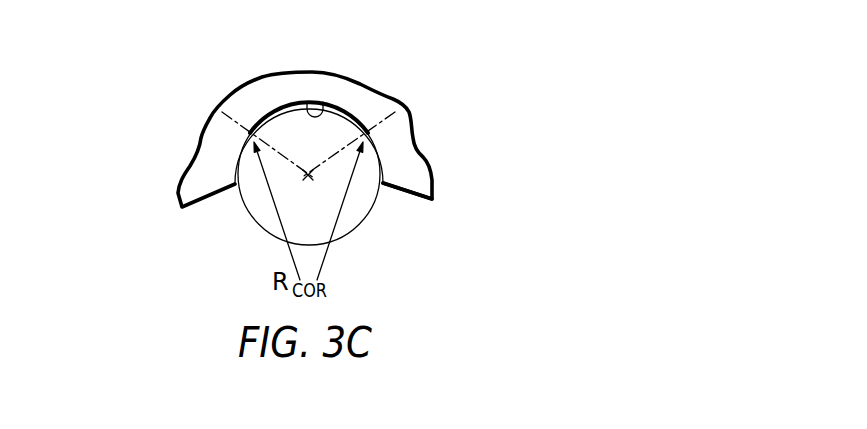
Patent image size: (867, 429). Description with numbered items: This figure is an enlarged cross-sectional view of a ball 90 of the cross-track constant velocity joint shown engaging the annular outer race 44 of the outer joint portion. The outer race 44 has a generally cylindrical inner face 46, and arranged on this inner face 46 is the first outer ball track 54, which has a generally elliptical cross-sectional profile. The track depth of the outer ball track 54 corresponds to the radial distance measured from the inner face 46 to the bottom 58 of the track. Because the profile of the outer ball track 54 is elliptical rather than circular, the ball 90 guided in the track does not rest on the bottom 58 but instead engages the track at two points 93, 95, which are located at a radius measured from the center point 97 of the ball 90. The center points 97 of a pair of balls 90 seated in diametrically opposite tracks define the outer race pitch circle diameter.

The outer race 44 is at (152, 150).
The inner face 46 is at (409, 194).
The first outer ball track 54 is at (370, 150).
The bottom of outer ball track 58 is at (319, 115).
The ball 90 is at (253, 218).
The engagement point 93 is at (250, 133).
The engagement point 95 is at (374, 136).
The center point 97 is at (306, 178).